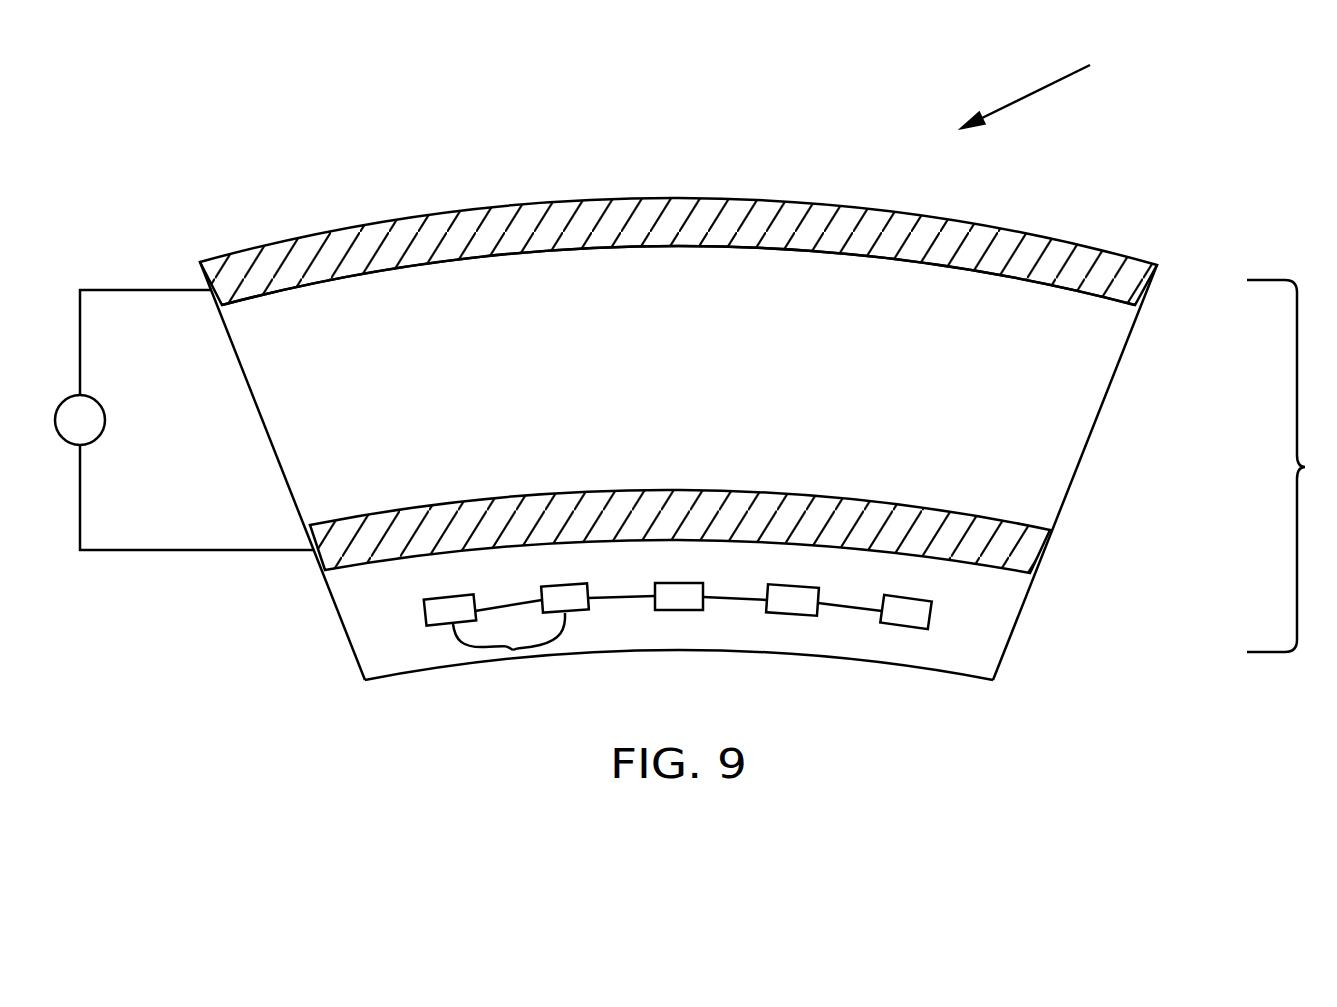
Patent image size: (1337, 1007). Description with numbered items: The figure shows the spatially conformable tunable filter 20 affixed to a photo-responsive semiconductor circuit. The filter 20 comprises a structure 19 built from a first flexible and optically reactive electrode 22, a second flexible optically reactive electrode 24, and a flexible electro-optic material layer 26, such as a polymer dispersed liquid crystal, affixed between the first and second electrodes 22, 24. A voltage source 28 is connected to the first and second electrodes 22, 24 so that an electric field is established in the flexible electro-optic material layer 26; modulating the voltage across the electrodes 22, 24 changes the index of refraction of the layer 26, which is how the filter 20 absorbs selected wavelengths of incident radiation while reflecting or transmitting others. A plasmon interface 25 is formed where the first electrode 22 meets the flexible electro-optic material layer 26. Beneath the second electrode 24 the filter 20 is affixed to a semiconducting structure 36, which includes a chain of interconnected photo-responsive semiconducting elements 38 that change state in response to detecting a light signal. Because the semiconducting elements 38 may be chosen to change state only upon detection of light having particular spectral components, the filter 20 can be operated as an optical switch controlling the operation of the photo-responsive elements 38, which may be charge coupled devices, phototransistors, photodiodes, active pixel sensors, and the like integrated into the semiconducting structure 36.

The structure 19 is at (1292, 466).
The spatially conformable tunable filter 20 is at (1045, 83).
The first flexible optically reactive electrode 22 is at (1135, 293).
The second flexible optically reactive electrode 24 is at (1027, 553).
The plasmon interface 25 is at (972, 275).
The flexible electro-optic material layer 26 is at (1098, 354).
The voltage source 28 is at (104, 410).
The semiconducting structure 36 is at (1015, 630).
The photo-responsive semiconducting elements 38 is at (513, 650).